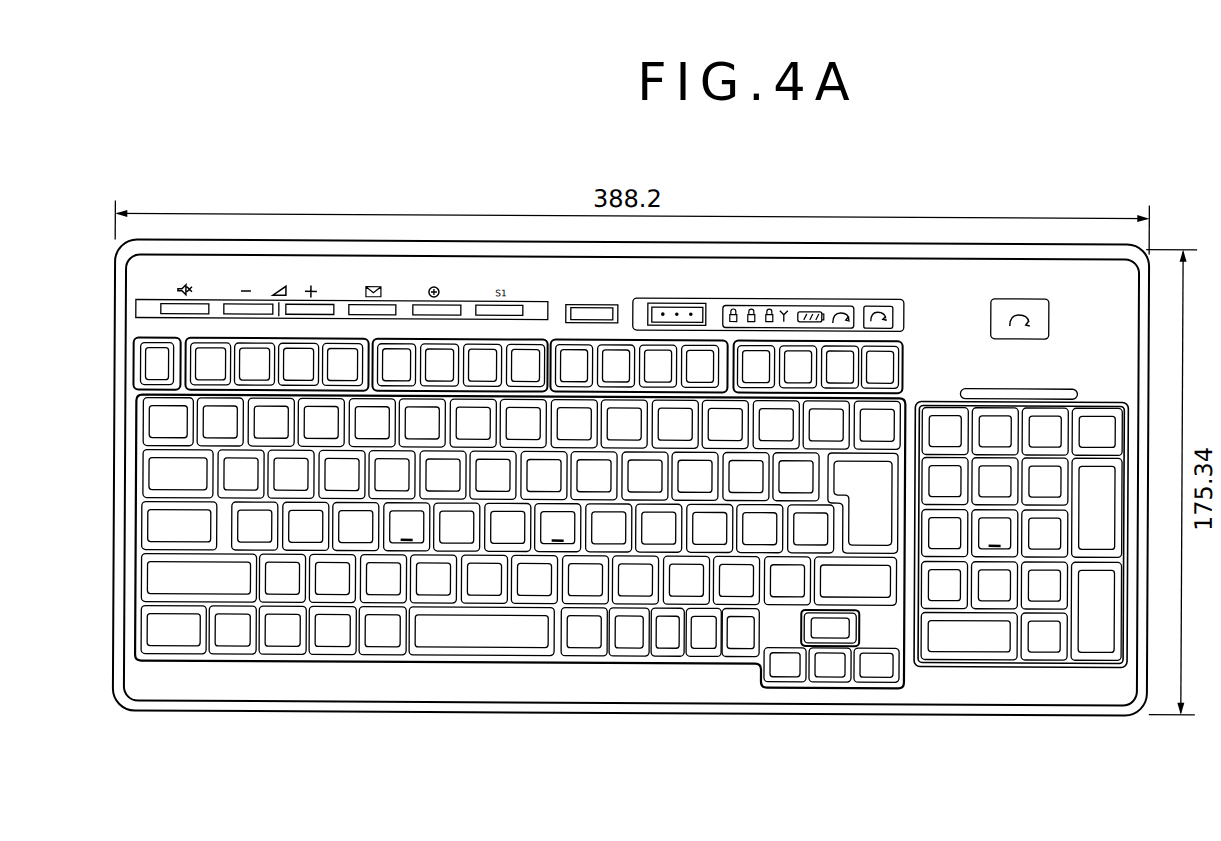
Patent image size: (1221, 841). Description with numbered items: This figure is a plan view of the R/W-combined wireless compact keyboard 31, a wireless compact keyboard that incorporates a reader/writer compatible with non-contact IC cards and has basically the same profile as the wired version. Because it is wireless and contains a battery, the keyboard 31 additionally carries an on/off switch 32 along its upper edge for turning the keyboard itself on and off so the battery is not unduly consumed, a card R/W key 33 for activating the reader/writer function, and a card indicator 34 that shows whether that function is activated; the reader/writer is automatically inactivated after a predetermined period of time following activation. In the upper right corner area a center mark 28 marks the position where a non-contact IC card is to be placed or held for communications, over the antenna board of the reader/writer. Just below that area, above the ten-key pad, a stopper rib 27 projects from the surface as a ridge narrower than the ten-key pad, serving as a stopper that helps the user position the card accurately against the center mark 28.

The stopper rib 27 is at (1068, 386).
The center mark 28 is at (1020, 296).
The R/W-combined wireless compact keyboard 31 is at (460, 716).
The on/off switch 32 is at (706, 302).
The card R/W key 33 is at (877, 304).
The card indicator 34 is at (841, 300).